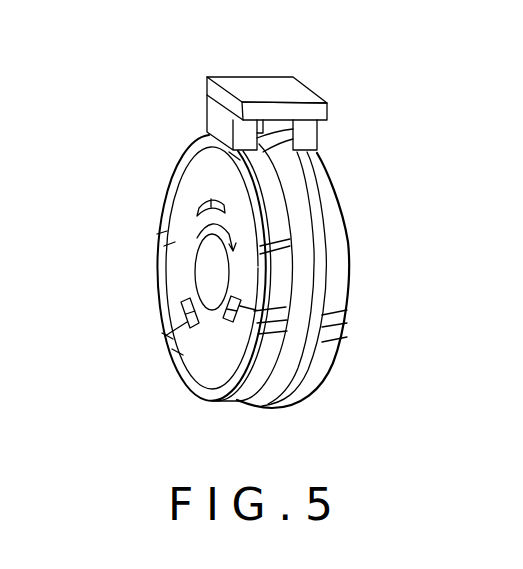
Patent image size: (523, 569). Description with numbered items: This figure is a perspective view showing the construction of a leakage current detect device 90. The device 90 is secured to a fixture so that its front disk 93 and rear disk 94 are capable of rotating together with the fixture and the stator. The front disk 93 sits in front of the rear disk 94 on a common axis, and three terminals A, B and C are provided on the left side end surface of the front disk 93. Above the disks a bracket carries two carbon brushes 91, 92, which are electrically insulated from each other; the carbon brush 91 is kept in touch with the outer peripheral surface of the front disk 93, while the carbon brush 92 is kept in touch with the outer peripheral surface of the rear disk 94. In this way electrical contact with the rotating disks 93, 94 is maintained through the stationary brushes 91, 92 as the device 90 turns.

The leakage current detect device 90 is at (195, 102).
The carbon brush 91 is at (207, 133).
The carbon brush 92 is at (319, 137).
The front disk 93 is at (177, 381).
The rear disk 94 is at (333, 373).